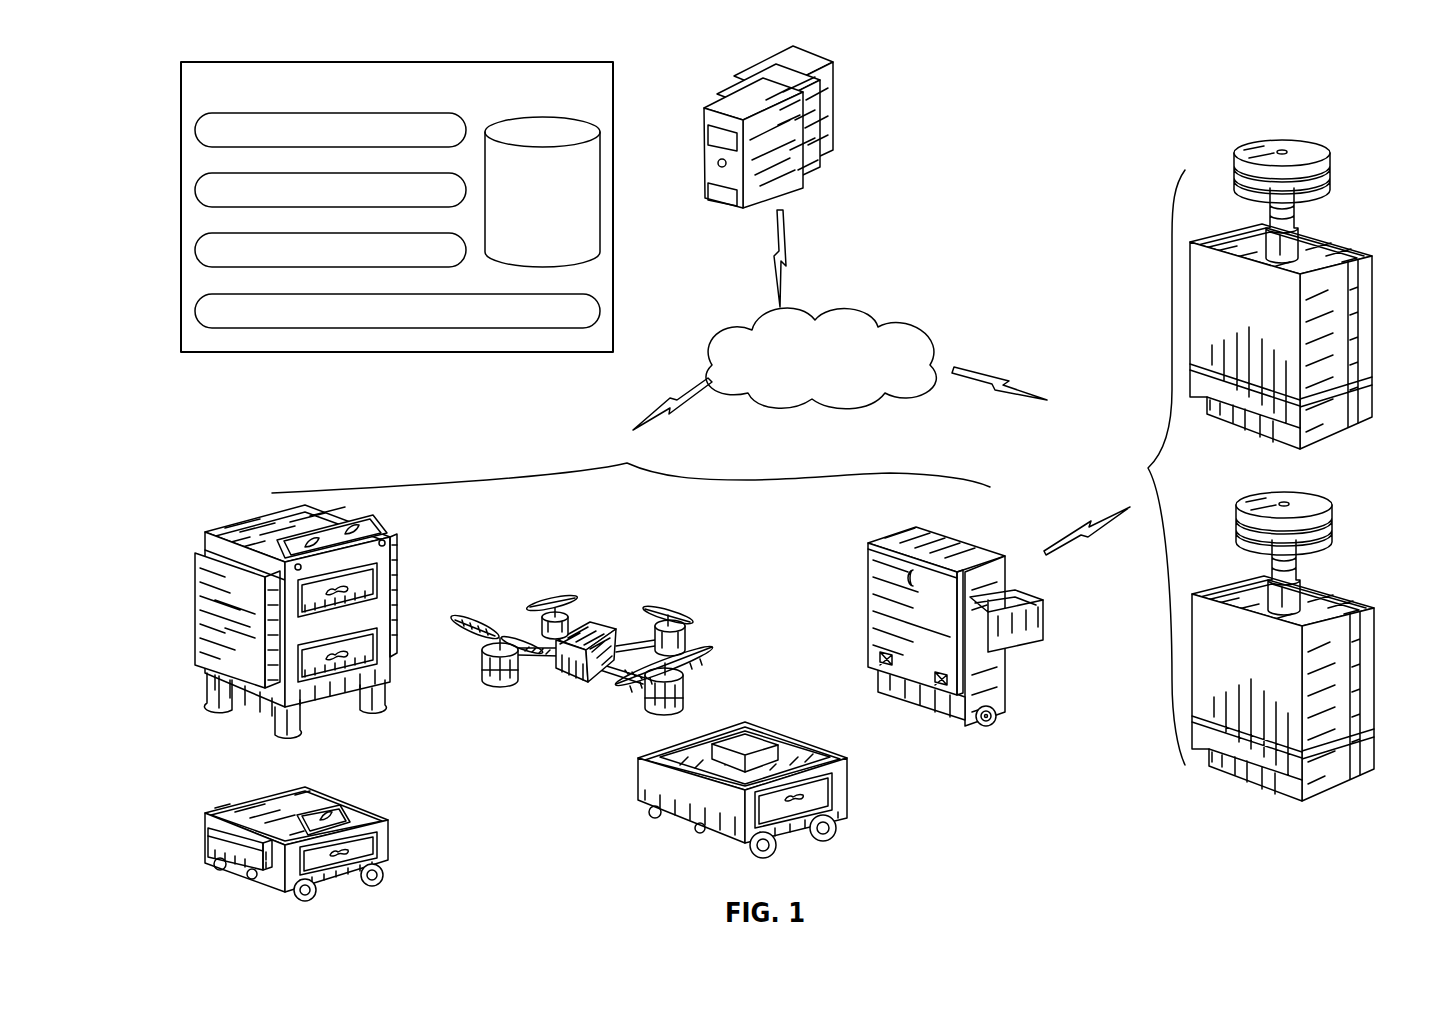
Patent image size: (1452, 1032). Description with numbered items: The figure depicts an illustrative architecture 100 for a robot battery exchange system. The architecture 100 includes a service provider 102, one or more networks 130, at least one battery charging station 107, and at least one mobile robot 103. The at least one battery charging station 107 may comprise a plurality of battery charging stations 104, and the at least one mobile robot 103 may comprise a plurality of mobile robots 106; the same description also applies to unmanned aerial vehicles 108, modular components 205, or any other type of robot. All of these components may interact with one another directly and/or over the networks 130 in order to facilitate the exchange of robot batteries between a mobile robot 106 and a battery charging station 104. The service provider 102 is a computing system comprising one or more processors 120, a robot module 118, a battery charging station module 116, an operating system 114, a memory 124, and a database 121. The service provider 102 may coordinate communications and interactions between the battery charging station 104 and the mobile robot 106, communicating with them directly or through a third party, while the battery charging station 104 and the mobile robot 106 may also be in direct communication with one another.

The architecture 100 is at (1169, 76).
The service provider 102 is at (838, 96).
The mobile robot 103 is at (627, 463).
The battery charging station 104 is at (1354, 194).
The mobile robot 106 is at (211, 794).
The battery charging station 107 is at (1148, 468).
The unmanned aerial vehicle 108 is at (580, 710).
The operating system 114 is at (195, 130).
The battery charging station module 116 is at (195, 190).
The robot module 118 is at (195, 251).
The processor 120 is at (195, 311).
The database 121 is at (523, 133).
The memory 124 is at (248, 62).
The network 130 is at (803, 371).
The modular component 205 is at (186, 526).